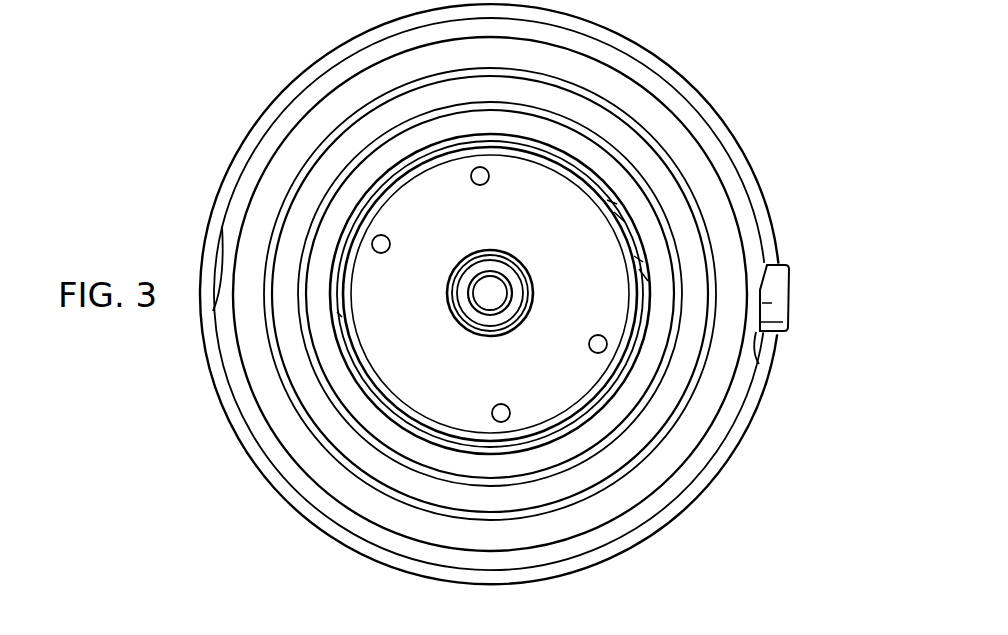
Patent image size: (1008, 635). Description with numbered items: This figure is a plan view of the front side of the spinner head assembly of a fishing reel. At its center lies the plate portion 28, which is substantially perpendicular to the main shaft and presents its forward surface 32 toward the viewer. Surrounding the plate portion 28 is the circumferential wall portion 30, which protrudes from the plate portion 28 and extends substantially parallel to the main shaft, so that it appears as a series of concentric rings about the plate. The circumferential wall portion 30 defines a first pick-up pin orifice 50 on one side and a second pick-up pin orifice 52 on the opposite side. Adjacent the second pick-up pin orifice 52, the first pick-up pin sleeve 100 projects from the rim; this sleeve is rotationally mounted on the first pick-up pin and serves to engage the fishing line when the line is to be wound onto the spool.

The plate portion 28 is at (548, 173).
The circumferential wall portion 30 is at (296, 78).
The forward surface 32 is at (557, 408).
The first pick-up pin orifice 50 is at (223, 260).
The second pick-up pin orifice 52 is at (762, 338).
The first pick-up pin sleeve 100 is at (775, 292).